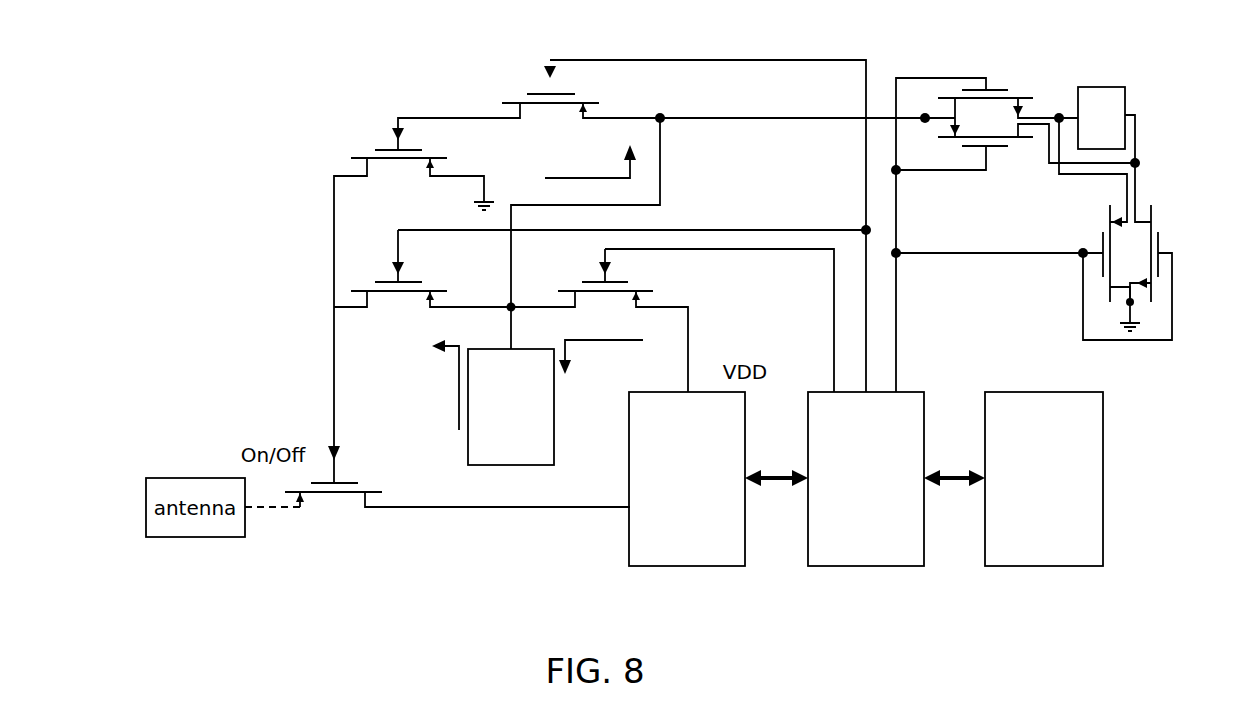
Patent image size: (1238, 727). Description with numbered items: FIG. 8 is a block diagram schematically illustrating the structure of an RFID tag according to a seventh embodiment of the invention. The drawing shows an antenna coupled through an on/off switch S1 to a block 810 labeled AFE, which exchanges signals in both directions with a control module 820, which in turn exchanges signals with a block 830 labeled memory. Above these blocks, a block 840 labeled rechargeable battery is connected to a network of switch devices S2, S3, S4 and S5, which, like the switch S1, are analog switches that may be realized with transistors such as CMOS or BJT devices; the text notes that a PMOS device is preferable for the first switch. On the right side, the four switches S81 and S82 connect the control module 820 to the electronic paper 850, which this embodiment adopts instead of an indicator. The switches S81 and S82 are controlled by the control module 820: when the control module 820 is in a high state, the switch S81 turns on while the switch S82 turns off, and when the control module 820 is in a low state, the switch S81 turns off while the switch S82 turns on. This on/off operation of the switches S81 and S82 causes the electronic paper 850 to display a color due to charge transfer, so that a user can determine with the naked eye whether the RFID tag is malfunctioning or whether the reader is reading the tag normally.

The analog front end (AFE) 810 is at (688, 566).
The control module 820 is at (871, 566).
The memory 830 is at (1068, 566).
The rechargeable battery 840 is at (468, 456).
The electronic paper 850 is at (1096, 87).
The switch device S1 is at (333, 511).
The switch device S2 is at (399, 308).
The switch device S3 is at (399, 174).
The switch device S4 is at (550, 120).
The switch S5 is at (605, 308).
The switch S81 is at (1075, 180).
The switch S82 is at (1024, 219).